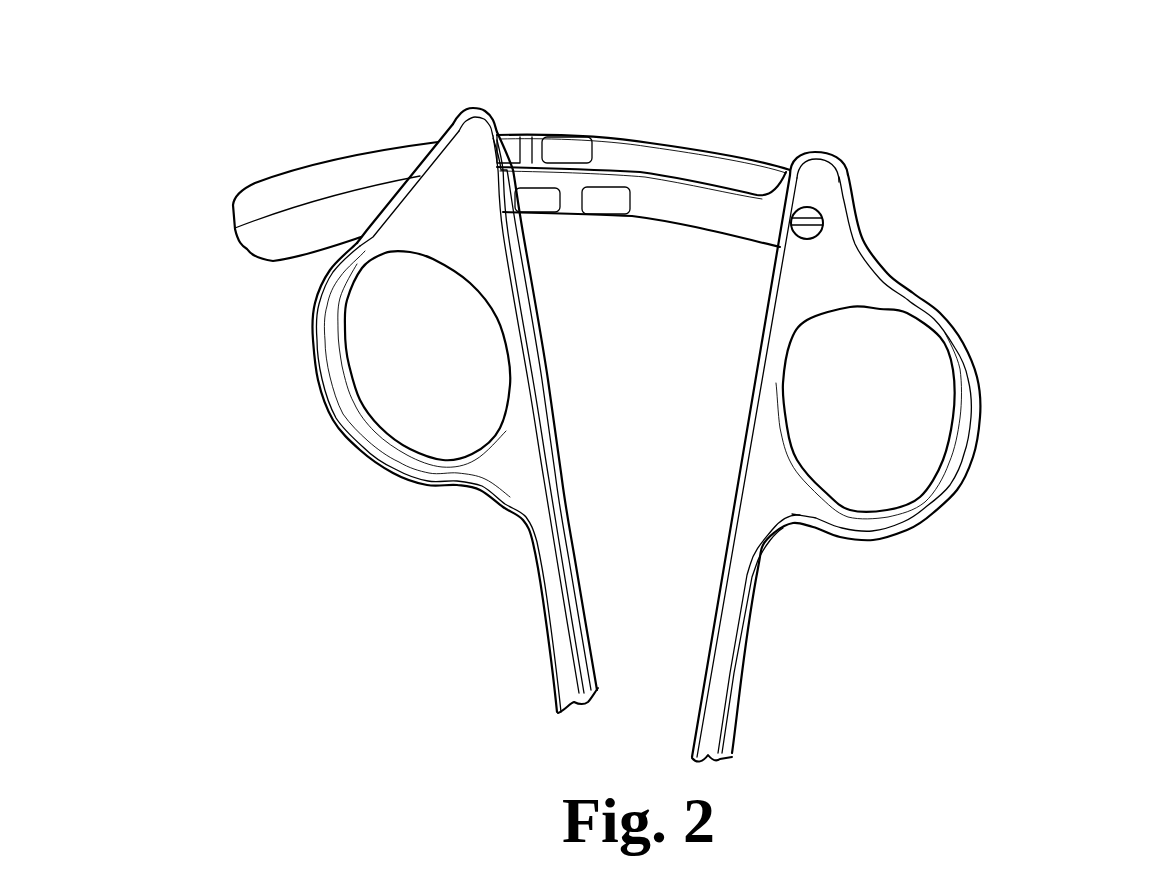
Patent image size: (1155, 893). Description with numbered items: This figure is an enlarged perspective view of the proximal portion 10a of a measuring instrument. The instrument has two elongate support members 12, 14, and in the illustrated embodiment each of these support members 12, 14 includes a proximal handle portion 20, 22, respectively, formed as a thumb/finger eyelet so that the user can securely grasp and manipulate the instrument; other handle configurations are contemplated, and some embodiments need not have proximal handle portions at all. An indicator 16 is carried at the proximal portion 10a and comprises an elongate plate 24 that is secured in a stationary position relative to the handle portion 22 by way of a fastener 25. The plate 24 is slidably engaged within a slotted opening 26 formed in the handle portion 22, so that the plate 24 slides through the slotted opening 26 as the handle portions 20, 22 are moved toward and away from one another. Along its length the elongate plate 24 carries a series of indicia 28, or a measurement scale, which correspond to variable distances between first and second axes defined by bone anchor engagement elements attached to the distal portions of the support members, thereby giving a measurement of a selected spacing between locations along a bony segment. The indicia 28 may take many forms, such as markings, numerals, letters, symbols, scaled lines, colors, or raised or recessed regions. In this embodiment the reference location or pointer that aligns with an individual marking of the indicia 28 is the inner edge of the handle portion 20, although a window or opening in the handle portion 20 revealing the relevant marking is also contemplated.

The proximal portion 10a is at (969, 201).
The elongate support member 12 is at (470, 626).
The elongate support member 14 is at (778, 680).
The indicator 16 is at (688, 106).
The proximal handle portion 20 is at (272, 380).
The proximal handle portion 22 is at (1010, 409).
The elongate plate 24 is at (753, 147).
The fastener 25 is at (825, 248).
The slotted opening 26 is at (503, 180).
The indicia 28 is at (570, 152).